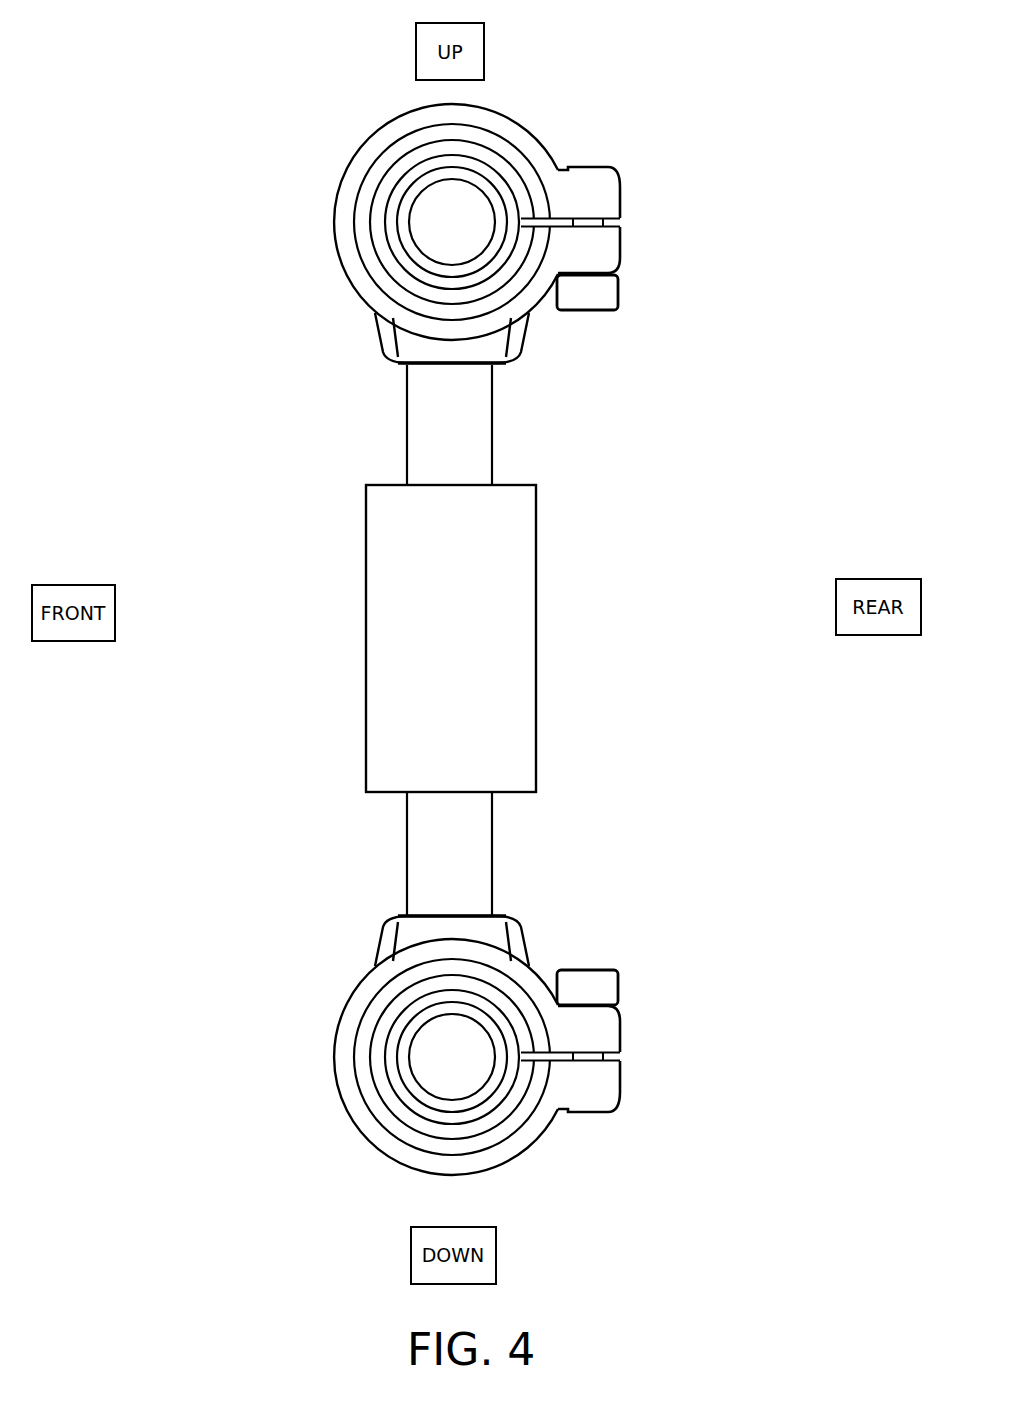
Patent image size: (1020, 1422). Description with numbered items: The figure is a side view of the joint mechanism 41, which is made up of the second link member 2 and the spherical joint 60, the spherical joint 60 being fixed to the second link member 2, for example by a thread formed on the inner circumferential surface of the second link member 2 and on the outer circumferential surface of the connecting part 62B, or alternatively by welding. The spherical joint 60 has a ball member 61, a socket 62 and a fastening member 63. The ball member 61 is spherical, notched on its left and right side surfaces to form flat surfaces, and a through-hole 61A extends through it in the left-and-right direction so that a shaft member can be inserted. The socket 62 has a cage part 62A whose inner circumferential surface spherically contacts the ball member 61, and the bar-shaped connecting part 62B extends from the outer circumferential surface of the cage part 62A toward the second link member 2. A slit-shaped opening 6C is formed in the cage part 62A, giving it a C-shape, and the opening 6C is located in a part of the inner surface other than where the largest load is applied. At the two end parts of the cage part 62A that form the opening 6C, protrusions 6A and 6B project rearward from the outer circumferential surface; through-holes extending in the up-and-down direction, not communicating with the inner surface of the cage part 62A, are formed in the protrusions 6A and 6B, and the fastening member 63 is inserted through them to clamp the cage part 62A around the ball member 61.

The joint mechanism 41 is at (462, 12).
The second link member 2 is at (395, 666).
The spherical joint 60 is at (680, 610).
The protrusion 6A is at (602, 187).
The protrusion 6B is at (602, 253).
The opening 6C is at (615, 226).
The ball member 61 is at (368, 227).
The through-hole 61A is at (456, 190).
The socket 62 is at (350, 160).
The cage part 62A is at (433, 116).
The connecting part 62B is at (432, 385).
The fastening member 63 is at (595, 298).